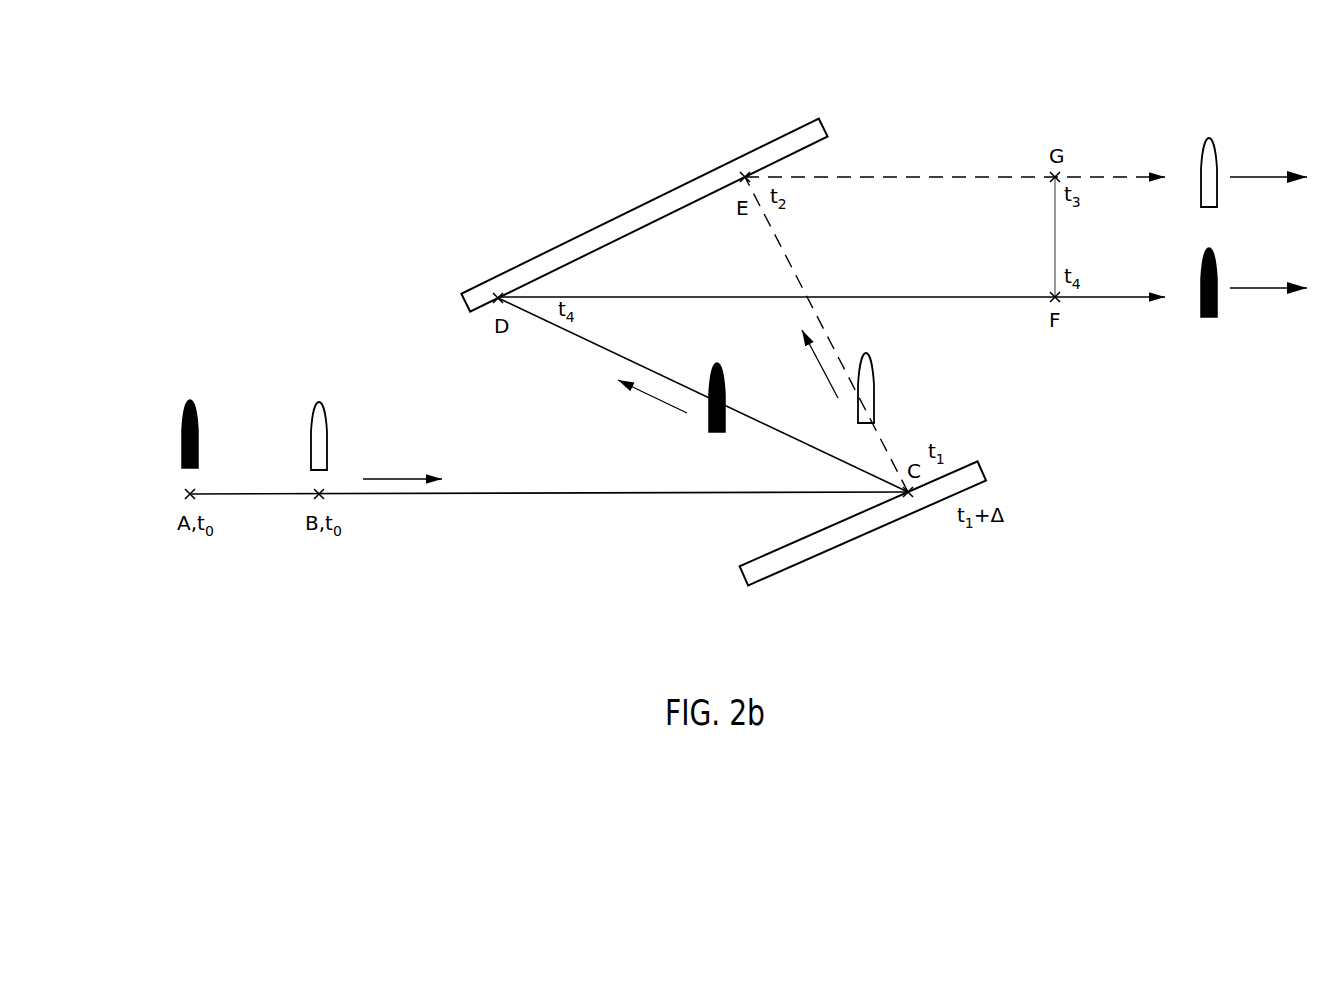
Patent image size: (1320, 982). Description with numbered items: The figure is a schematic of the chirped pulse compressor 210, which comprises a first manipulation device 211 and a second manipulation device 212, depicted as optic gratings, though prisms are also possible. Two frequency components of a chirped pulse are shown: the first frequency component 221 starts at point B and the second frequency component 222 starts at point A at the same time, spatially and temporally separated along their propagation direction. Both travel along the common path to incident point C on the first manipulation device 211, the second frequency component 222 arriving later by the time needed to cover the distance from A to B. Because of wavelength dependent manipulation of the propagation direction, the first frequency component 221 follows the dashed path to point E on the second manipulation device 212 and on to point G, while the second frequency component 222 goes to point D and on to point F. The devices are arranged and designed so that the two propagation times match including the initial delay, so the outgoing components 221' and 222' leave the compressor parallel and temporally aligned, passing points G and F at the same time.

The chirped pulse compressor 210 is at (723, 331).
The first manipulation device 211 is at (890, 524).
The second manipulation device 212 is at (670, 191).
The first frequency component 221 is at (340, 413).
The second frequency component 222 is at (211, 412).
The first frequency component leaving the compressor 221' is at (1216, 139).
The second frequency component leaving the compressor 222' is at (1216, 313).